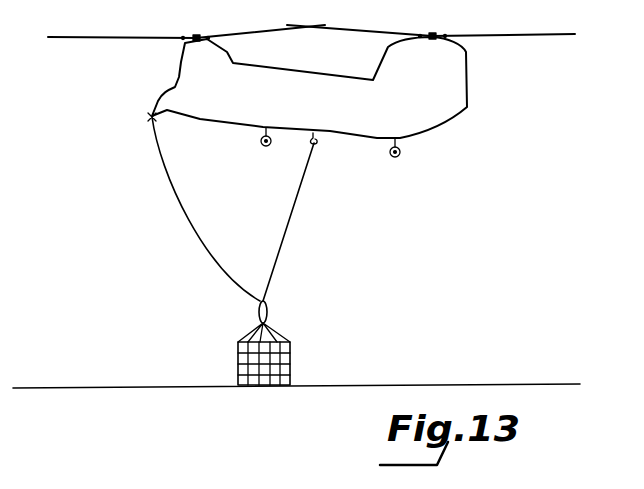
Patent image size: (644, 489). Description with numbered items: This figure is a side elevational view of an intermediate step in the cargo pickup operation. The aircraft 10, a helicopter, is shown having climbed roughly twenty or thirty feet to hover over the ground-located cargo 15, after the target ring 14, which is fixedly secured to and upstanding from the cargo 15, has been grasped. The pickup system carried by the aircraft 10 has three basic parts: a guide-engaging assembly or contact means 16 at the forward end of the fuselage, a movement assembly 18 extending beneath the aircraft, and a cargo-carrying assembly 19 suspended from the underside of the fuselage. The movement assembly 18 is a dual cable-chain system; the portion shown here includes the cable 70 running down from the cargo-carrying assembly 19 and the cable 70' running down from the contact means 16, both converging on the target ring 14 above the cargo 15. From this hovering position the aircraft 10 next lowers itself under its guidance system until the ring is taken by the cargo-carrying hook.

The aircraft 10 is at (335, 72).
The guide-engaging assembly 16 is at (146, 117).
The cargo-carrying assembly 19 is at (318, 141).
The movement assembly 18 is at (247, 209).
The cable 70 is at (299, 222).
The cable 70' is at (206, 209).
The target ring 14 is at (254, 315).
The cargo 15 is at (238, 360).